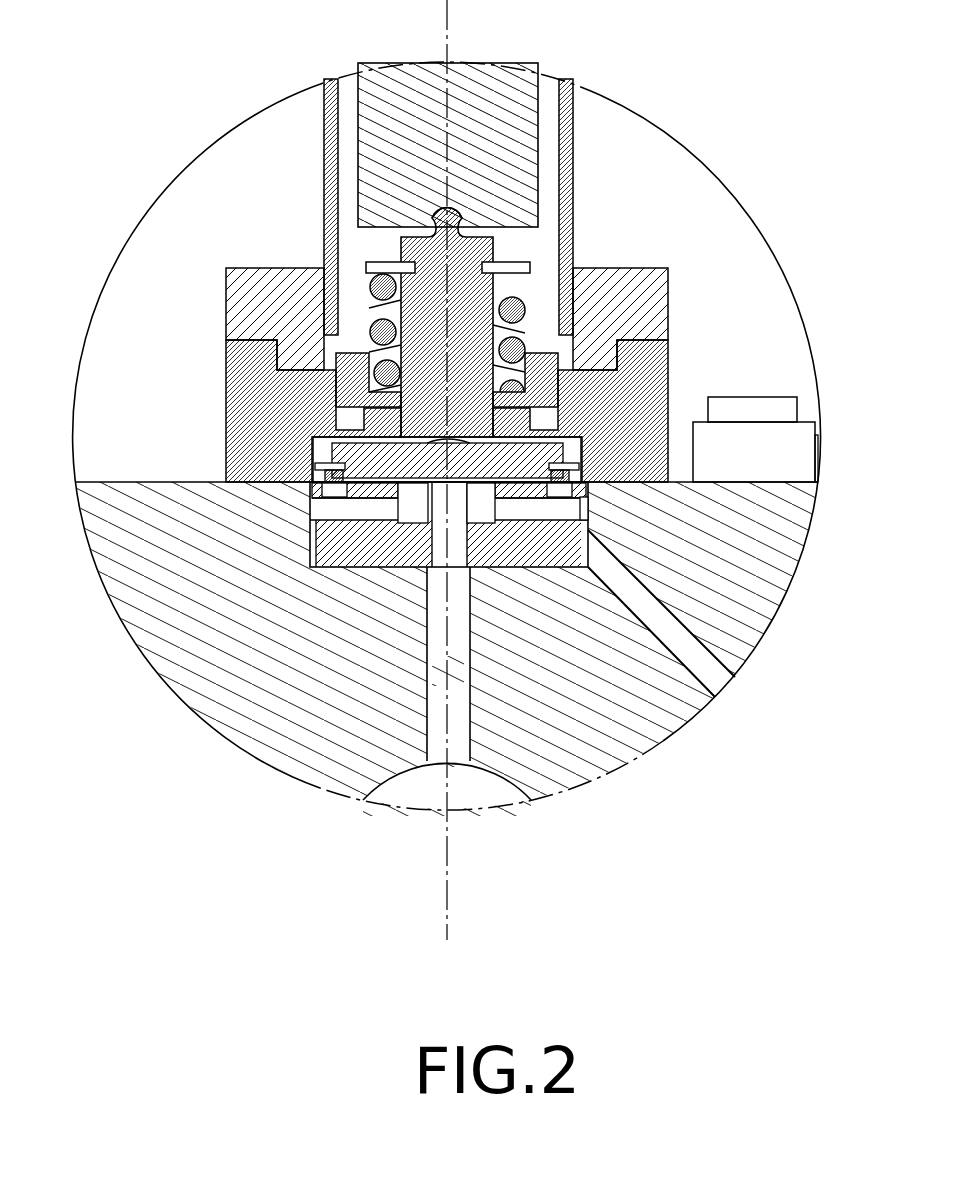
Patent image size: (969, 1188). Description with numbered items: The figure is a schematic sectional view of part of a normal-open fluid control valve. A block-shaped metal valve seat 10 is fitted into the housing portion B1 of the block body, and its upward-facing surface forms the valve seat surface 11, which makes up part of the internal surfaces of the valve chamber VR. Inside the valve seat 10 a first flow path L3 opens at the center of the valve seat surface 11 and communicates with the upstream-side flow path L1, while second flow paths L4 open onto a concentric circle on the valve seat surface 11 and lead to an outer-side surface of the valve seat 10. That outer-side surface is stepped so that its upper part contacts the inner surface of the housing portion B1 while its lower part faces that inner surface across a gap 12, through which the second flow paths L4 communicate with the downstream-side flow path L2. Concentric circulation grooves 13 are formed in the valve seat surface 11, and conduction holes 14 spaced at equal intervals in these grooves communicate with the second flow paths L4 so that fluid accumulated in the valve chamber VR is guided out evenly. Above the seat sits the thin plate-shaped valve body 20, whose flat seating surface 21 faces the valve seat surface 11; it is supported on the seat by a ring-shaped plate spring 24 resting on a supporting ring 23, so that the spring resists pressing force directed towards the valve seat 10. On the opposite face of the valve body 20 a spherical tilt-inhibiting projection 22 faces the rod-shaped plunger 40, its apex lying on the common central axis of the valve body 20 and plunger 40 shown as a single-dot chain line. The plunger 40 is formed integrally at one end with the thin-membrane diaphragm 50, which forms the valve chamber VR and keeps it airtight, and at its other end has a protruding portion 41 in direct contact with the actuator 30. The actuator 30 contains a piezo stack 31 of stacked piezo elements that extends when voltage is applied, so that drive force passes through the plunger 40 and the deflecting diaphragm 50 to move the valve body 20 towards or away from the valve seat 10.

The valve seat 10 is at (588, 490).
The valve seat surface 11 is at (440, 437).
The gap 12 is at (309, 547).
The circulation grooves 13 is at (317, 468).
The conduction holes 14 is at (333, 497).
The valve body 20 is at (320, 455).
The seating surface 21 is at (493, 497).
The tilt-inhibiting projection 22 is at (400, 346).
The supporting ring 23 is at (583, 475).
The plate spring 24 is at (588, 500).
The actuator 30 is at (540, 93).
The piezo stack 31 is at (538, 147).
The plunger 40 is at (495, 250).
The protruding portion 41 is at (433, 216).
The diaphragm 50 is at (640, 293).
The valve chamber VR is at (668, 386).
The upstream-side flow path L1 is at (448, 664).
The downstream-side flow path L2 is at (682, 650).
The first flow path L3 is at (449, 525).
The second flow paths L4 is at (592, 567).
The housing portion B1 is at (363, 567).